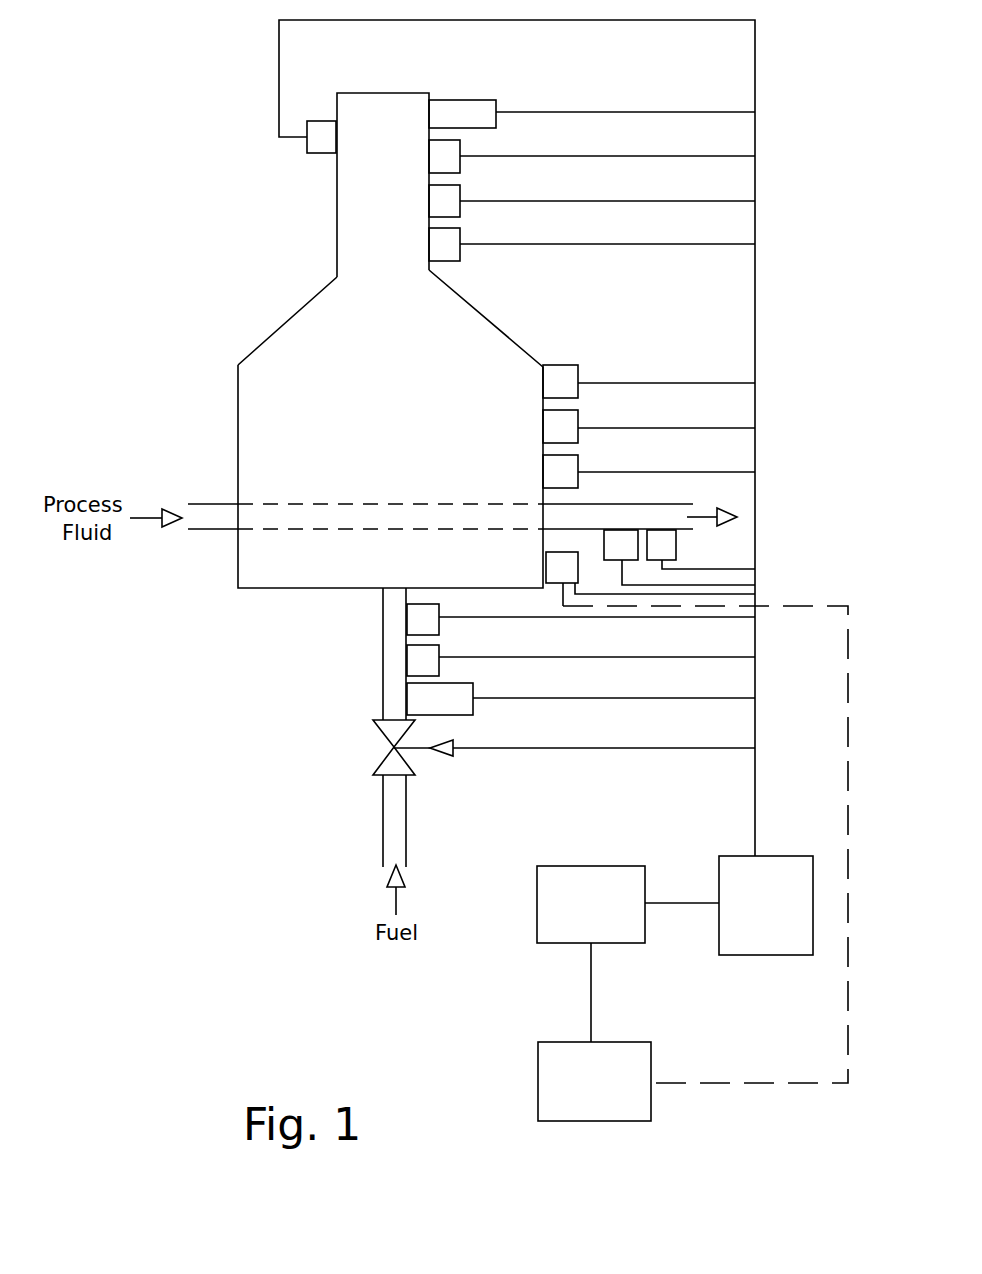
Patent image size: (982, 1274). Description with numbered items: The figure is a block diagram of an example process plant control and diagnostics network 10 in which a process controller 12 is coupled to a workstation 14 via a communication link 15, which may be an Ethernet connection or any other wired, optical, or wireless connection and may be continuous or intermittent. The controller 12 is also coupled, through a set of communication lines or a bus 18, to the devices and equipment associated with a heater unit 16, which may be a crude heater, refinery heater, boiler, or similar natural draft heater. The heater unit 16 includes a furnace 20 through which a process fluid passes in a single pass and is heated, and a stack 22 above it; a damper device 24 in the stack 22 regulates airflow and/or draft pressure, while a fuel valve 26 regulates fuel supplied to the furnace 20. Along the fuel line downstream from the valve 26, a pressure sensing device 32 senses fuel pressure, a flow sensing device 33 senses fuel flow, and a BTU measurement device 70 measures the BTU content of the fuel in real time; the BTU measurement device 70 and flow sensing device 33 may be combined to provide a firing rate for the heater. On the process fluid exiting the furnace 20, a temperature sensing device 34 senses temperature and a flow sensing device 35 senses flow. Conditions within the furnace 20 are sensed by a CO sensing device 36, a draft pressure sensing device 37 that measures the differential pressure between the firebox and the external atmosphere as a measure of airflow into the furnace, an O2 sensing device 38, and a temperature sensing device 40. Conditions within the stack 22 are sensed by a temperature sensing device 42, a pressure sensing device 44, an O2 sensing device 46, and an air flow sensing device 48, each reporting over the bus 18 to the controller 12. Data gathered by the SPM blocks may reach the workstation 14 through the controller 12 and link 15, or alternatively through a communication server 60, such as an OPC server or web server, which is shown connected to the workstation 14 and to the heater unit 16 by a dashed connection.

The process plant control and diagnostics network 10 is at (152, 108).
The process controller 12 is at (782, 955).
The workstation 14 is at (570, 866).
The communication link 15 is at (695, 903).
The heater unit 16 is at (256, 288).
The bus 18 is at (756, 70).
The furnace 20 is at (390, 476).
The stack 22 is at (383, 185).
The damper device 24 is at (458, 100).
The fuel valve 26 is at (405, 760).
The pressure sensing device 32 is at (439, 668).
The flow sensing device 33 is at (437, 626).
The temperature sensing device 34 is at (604, 540).
The flow sensing device 35 is at (676, 545).
The CO sensing device 36 is at (578, 375).
The draft pressure sensing device 37 is at (553, 583).
The O2 sensing device 38 is at (578, 420).
The temperature sensing device 40 is at (578, 465).
The temperature sensing device 42 is at (460, 150).
The pressure sensing device 44 is at (460, 193).
The O2 sensing device 46 is at (460, 238).
The air flow sensing device 48 is at (319, 153).
The communication server 60 is at (597, 1121).
The BTU measurement device 70 is at (468, 715).